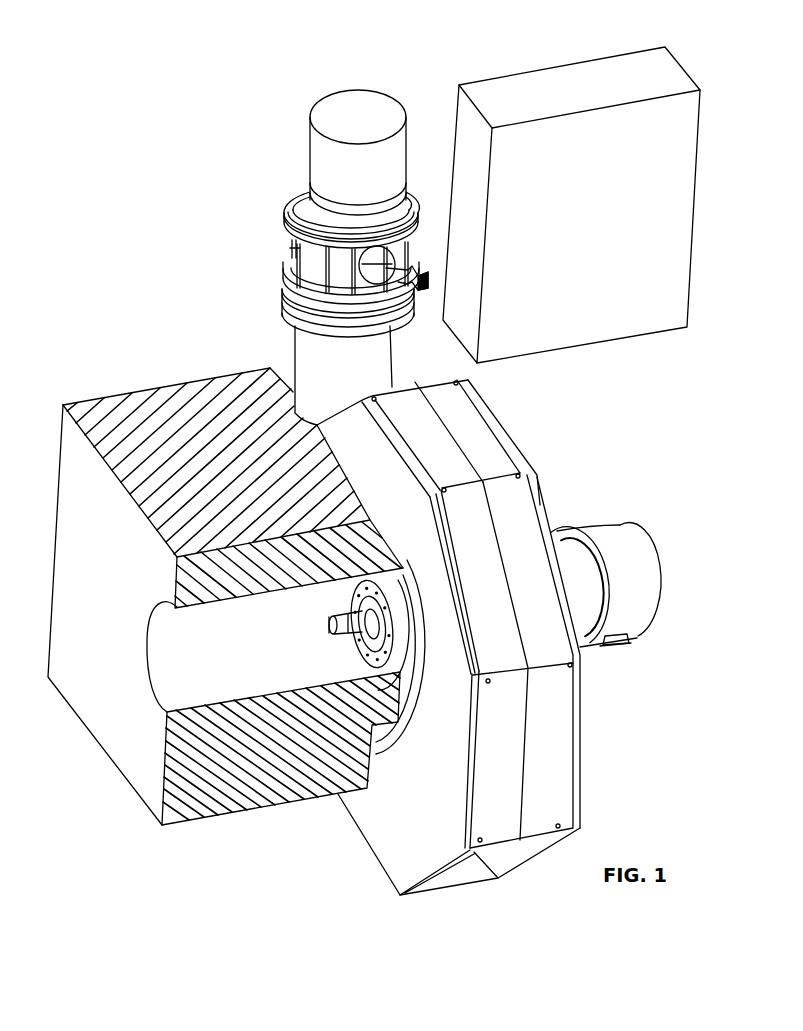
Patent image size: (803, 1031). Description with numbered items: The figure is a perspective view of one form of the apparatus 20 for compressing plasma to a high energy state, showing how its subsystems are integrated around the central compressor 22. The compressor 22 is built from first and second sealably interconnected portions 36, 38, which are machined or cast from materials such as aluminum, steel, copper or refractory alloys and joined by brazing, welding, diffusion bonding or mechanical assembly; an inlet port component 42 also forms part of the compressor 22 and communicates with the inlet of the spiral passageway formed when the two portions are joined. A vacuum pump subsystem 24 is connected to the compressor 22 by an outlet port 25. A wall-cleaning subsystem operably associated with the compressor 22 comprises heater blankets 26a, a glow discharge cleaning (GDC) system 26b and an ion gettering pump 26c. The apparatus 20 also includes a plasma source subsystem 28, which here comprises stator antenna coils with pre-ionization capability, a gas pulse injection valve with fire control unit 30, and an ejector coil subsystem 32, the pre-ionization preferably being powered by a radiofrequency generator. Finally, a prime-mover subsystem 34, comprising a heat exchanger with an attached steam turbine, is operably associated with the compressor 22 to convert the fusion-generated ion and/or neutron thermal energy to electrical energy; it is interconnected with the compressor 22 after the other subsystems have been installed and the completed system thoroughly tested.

The apparatus for compressing plasma to a high energy state 20 is at (330, 80).
The compressor 22 is at (553, 503).
The vacuum pump subsystem 24 is at (617, 585).
The outlet port 25 is at (355, 588).
The heater blankets 26a is at (538, 505).
The glow discharge cleaning (GDC) system 26b is at (348, 163).
The ion gettering pump 26c is at (352, 635).
The plasma source subsystem 28 is at (290, 288).
The gas pulse injection valve with fire control unit 30 is at (427, 283).
The ejector coil subsystem 32 is at (287, 255).
The prime-mover subsystem 34 is at (183, 642).
The first portion of compressor 36 is at (517, 530).
The second portion of compressor 38 is at (505, 720).
The inlet port component 42 is at (305, 360).